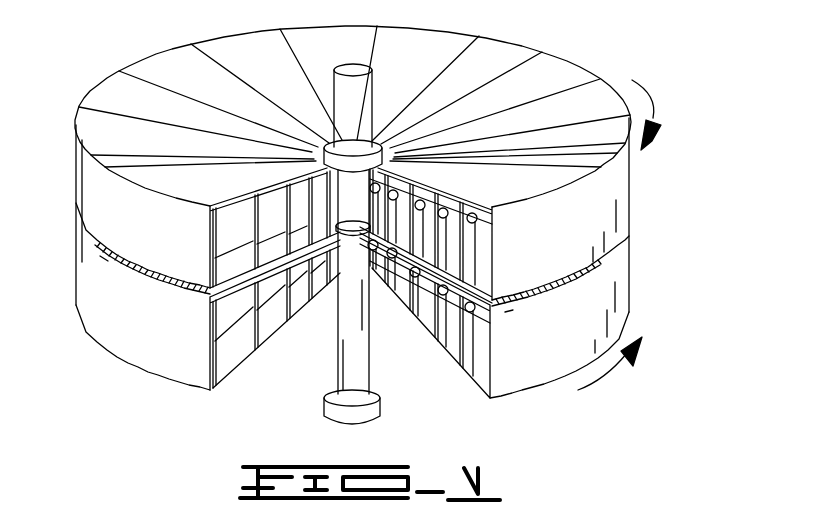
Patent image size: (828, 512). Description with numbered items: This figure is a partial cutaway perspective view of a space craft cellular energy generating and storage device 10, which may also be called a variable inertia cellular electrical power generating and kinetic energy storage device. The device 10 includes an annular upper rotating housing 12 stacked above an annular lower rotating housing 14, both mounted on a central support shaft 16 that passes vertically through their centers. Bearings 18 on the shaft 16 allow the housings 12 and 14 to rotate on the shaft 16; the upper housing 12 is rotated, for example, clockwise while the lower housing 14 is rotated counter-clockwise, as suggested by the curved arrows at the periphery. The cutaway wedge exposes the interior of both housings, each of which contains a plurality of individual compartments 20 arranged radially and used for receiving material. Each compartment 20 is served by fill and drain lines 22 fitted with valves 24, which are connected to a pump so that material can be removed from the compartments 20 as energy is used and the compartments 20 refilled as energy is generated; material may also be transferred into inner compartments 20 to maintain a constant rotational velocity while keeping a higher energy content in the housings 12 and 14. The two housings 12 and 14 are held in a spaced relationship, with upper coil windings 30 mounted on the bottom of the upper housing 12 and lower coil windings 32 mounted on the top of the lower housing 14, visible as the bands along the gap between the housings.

The space craft cellular energy generating and storage device 10 is at (600, 55).
The annular upper rotating housing 12 is at (628, 178).
The annular lower rotating housing 14 is at (620, 283).
The central support shaft 16 is at (340, 369).
The bearings 18 is at (388, 137).
The compartments 20 is at (263, 217).
The fill and drain lines 22 is at (443, 208).
The valves 24 is at (493, 232).
The upper coil windings 30 is at (128, 233).
The lower coil windings 32 is at (138, 283).